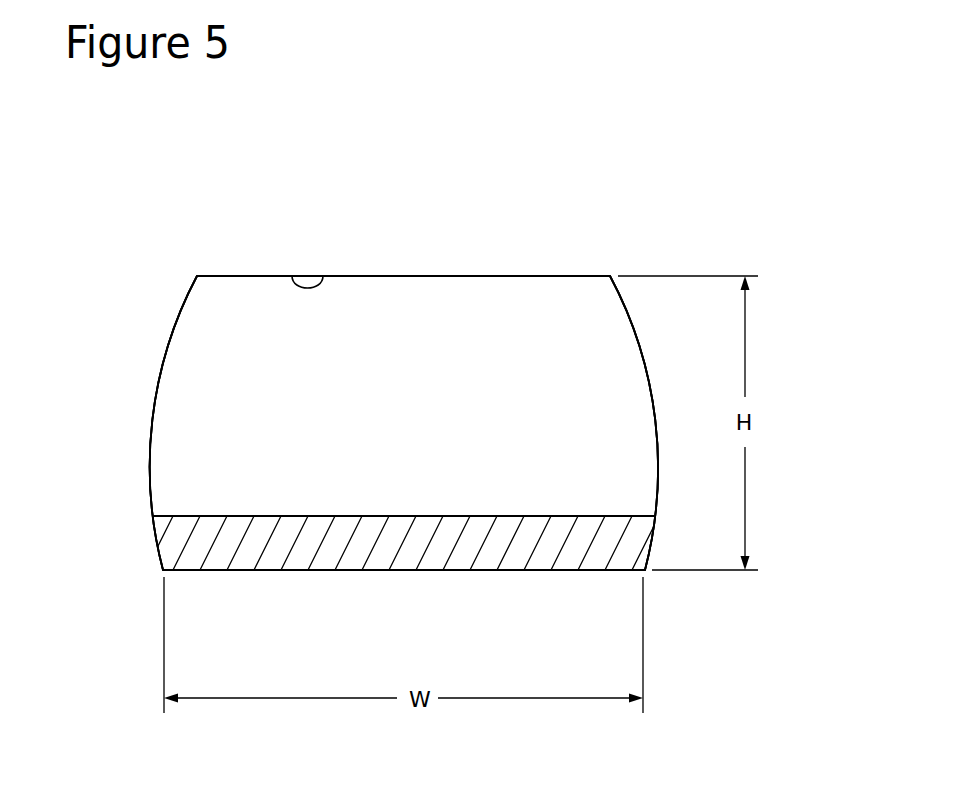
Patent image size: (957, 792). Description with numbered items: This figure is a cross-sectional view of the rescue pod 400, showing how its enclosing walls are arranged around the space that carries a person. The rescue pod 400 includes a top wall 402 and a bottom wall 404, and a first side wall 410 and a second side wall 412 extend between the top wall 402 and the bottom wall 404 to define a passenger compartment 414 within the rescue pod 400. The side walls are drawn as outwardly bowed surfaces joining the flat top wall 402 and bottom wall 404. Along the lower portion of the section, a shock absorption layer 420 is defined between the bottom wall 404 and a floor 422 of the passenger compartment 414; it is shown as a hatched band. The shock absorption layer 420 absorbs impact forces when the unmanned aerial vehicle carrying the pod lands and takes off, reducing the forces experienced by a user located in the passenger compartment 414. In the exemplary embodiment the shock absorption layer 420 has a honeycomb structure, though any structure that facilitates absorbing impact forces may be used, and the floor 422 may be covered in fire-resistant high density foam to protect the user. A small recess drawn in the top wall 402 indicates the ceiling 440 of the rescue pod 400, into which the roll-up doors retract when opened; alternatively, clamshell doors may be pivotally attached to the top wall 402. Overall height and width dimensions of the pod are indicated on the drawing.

The rescue pod 400 is at (550, 210).
The top wall 402 is at (248, 276).
The bottom wall 404 is at (217, 571).
The first side wall 410 is at (170, 340).
The second side wall 412 is at (632, 322).
The passenger compartment 414 is at (408, 350).
The shock absorption layer 420 is at (170, 538).
The floor 422 is at (190, 516).
The ceiling 440 is at (325, 276).